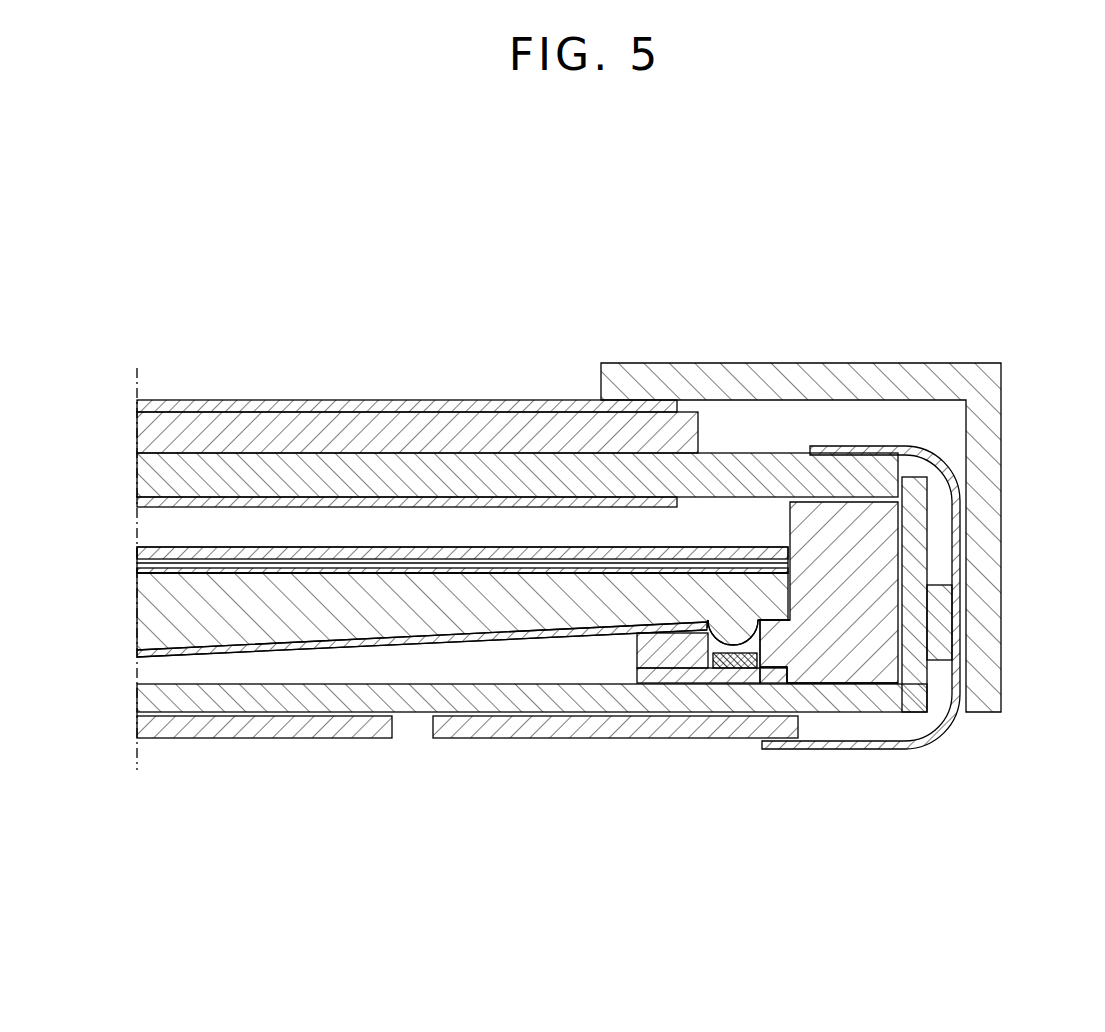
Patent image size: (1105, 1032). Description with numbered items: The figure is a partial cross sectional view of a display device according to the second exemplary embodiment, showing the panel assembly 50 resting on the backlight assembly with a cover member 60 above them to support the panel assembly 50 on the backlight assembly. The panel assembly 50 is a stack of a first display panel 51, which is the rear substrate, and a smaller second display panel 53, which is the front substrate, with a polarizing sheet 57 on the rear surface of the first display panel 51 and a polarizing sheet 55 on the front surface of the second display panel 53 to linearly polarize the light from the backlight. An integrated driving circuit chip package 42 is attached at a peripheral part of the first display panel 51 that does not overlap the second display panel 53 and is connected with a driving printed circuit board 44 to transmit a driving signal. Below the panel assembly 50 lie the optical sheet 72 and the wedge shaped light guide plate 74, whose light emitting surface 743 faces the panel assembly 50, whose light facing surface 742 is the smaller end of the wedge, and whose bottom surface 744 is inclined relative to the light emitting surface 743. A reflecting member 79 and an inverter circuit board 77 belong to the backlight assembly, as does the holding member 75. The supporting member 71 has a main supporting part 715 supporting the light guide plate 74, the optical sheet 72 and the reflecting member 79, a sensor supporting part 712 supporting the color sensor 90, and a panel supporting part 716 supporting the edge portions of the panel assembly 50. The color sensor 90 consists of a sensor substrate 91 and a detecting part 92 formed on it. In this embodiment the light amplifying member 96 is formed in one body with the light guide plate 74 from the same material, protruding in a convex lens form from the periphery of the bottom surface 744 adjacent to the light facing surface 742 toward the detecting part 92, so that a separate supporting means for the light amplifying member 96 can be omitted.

The panel assembly 50 is at (517, 375).
The polarizing sheet 57 is at (268, 398).
The second display panel 53 is at (325, 418).
The first display panel 51 is at (381, 457).
The polarizing sheet 55 is at (438, 500).
The light emitting surface 743 is at (500, 590).
The main supporting part 715 is at (683, 648).
The light facing surface 742 is at (739, 626).
The cover member 60 is at (786, 363).
The panel supporting part 716 is at (850, 503).
The supporting member 71 is at (906, 602).
The optical sheet 72 is at (137, 550).
The light guide plate 74 is at (130, 624).
The inverter circuit board 77 is at (233, 740).
The reflecting member 79 is at (303, 654).
The bottom surface 744 is at (368, 637).
The driving printed circuit board 44 is at (462, 740).
The holding member 75 is at (546, 710).
The sensor substrate 91 is at (682, 683).
The detecting part 92 is at (743, 683).
The light amplifying member 96 is at (761, 688).
The sensor supporting part 712 is at (780, 657).
The integrated driving circuit chip package 42 is at (888, 750).
The color sensor 90 is at (698, 750).